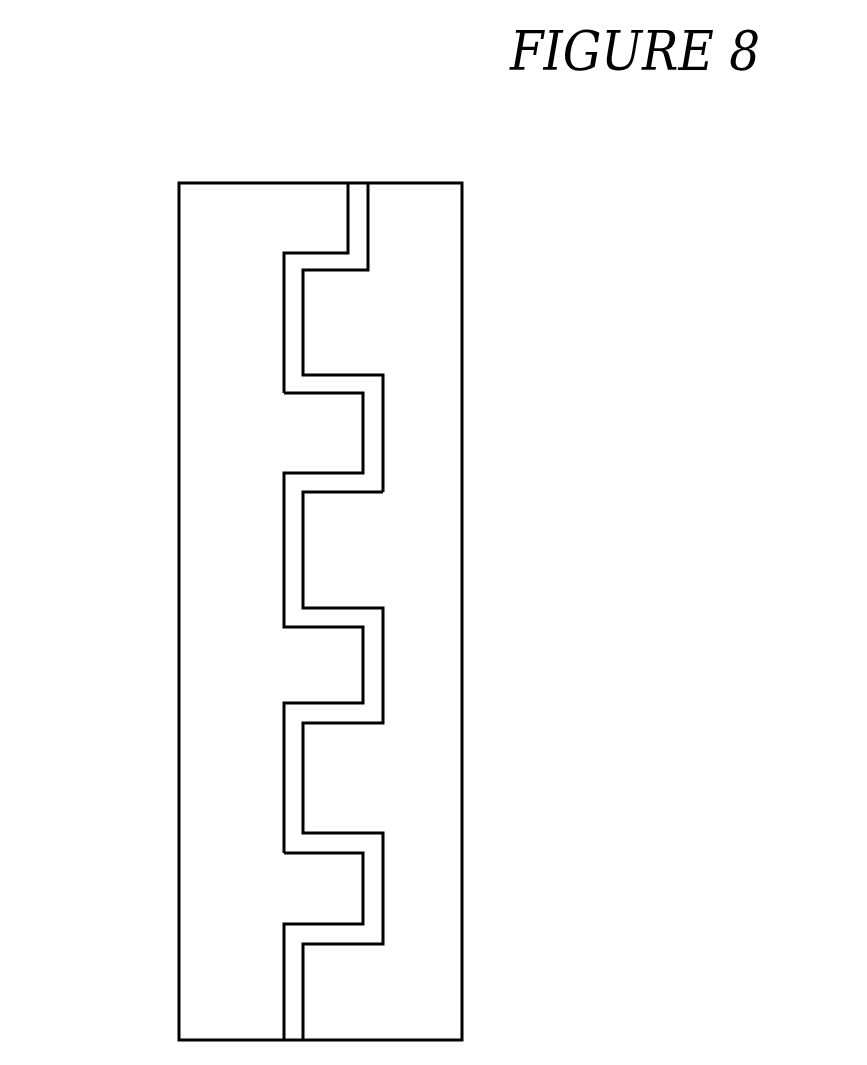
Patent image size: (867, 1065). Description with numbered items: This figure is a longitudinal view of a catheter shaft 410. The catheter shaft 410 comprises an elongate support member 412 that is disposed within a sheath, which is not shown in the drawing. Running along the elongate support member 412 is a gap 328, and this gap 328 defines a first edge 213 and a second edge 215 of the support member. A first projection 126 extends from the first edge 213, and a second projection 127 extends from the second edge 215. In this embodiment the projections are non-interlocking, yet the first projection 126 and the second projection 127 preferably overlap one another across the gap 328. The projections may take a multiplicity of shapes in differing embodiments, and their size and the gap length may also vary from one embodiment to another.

The catheter shaft 410 is at (350, 611).
The elongate support member 412 is at (230, 283).
The first edge 213 is at (348, 212).
The second edge 215 is at (368, 210).
The gap 328 is at (287, 765).
The second projection 127 is at (303, 797).
The first projection 126 is at (363, 888).